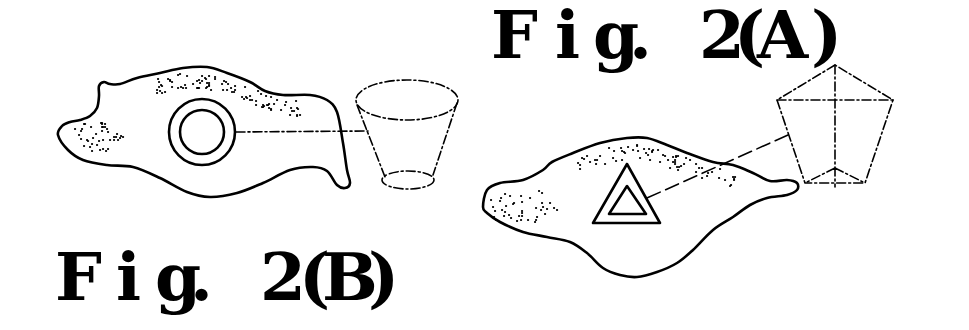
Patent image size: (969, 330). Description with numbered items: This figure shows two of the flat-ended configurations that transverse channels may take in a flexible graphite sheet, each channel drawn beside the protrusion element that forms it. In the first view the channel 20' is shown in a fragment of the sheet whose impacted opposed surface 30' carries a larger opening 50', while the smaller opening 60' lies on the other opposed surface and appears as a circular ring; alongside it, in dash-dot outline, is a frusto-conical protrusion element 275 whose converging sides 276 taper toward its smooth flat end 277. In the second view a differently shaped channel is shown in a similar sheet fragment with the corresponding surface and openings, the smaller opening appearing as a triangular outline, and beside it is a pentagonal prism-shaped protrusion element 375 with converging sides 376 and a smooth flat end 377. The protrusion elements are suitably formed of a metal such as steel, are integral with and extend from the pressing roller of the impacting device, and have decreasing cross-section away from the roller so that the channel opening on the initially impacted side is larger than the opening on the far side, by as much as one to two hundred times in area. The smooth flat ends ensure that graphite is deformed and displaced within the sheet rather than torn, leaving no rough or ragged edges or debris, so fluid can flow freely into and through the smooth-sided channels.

In FIG. 2B, the channel 20' is at (187, 93).
In FIG. 2B, the opposed surface 30' is at (204, 144).
In FIG. 2B, the opening 50' is at (137, 181).
In FIG. 2B, the opening 60' is at (247, 112).
In FIG. 2B, the protrusion element 275 is at (408, 80).
In FIG. 2B, the converging sides 276 is at (450, 143).
In FIG. 2B, the flat end 277 is at (425, 183).
In FIG. 2A, the protrusion element 375 is at (880, 147).
In FIG. 2A, the converging sides 376 is at (783, 122).
In FIG. 2A, the flat end 377 is at (835, 185).